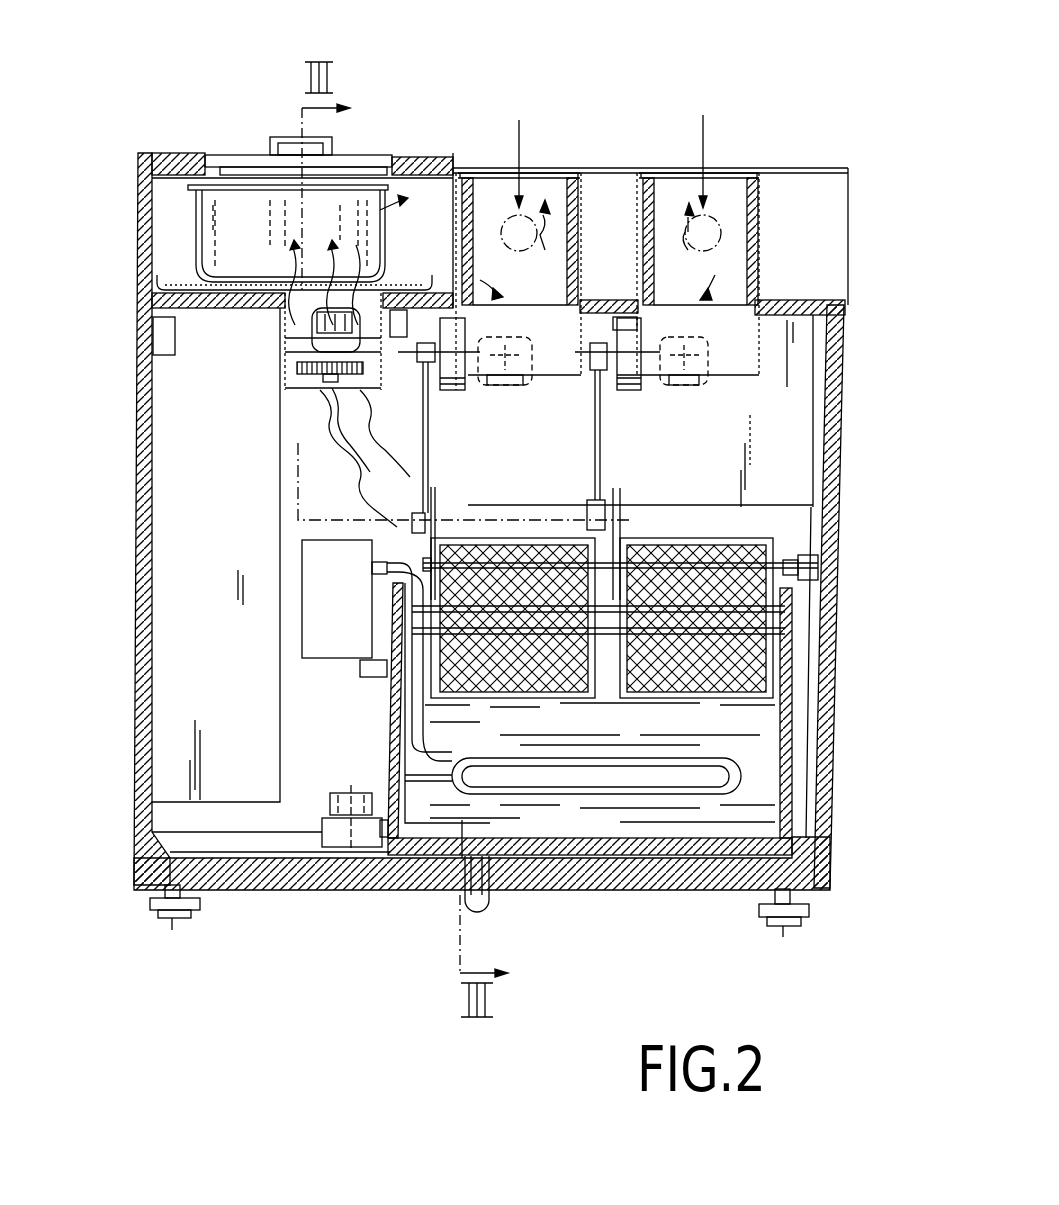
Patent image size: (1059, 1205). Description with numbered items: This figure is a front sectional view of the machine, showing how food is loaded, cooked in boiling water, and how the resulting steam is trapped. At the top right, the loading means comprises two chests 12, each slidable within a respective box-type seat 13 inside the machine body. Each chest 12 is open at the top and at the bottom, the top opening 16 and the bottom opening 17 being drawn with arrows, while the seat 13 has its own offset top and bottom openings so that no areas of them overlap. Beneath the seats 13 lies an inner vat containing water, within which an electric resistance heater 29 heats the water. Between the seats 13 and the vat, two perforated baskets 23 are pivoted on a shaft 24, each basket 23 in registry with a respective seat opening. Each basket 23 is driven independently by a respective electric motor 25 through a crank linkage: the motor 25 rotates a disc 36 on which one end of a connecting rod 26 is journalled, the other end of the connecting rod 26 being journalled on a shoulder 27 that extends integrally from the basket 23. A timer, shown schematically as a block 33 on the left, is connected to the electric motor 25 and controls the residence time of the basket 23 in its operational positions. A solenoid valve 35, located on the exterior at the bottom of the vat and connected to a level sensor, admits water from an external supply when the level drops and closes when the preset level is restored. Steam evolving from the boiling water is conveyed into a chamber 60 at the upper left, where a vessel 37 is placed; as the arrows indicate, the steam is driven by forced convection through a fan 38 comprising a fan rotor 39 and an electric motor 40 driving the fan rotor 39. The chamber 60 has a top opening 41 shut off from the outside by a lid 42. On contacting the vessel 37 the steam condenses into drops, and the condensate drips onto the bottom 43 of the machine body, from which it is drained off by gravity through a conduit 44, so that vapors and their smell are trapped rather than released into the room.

The chest 12 is at (623, 214).
The box-type seat 13 is at (601, 181).
The top opening 16 is at (611, 249).
The bottom opening 17 is at (607, 270).
The perforated basket 23 is at (665, 562).
The shaft 24 is at (659, 567).
The electric motor 25 is at (603, 405).
The connecting rod 26 is at (496, 438).
The shoulder 27 is at (565, 527).
The electric resistance heater 29 is at (539, 750).
The timer 33 is at (161, 552).
The solenoid valve 35 is at (332, 791).
The disc 36 is at (529, 397).
The vessel 37 is at (255, 255).
The fan 38 is at (321, 457).
The fan rotor 39 is at (295, 377).
The electric motor 40 is at (292, 333).
The top opening 41 is at (303, 87).
The lid 42 is at (289, 95).
The bottom 43 is at (482, 902).
The conduit 44 is at (523, 905).
The chamber 60 is at (456, 504).